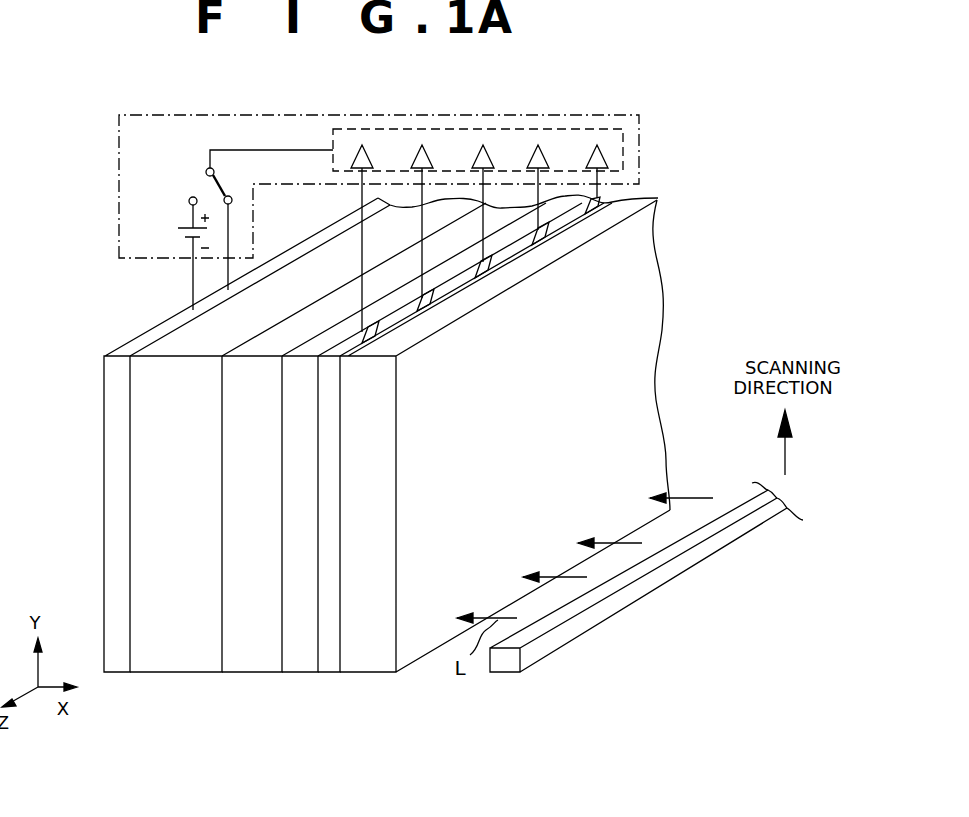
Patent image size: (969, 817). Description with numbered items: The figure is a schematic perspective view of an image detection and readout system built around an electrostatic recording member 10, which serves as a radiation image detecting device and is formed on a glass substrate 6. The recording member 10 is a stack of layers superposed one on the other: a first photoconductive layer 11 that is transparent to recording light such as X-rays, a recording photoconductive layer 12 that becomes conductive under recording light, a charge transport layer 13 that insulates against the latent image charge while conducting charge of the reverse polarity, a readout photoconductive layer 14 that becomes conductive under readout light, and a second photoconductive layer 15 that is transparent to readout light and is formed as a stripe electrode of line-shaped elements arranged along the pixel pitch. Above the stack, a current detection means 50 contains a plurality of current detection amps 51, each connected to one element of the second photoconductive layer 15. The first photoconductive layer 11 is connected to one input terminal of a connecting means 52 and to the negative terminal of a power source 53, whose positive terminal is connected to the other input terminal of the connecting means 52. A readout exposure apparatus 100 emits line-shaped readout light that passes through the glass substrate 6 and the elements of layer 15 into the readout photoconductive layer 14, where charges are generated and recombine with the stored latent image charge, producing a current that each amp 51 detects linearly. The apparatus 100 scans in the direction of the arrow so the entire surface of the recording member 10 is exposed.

The glass substrate 6 is at (383, 673).
The electrostatic recording member 10 is at (152, 312).
The first photoconductive layer 11 is at (118, 673).
The recording photoconductive layer 12 is at (174, 673).
The charge transport layer 13 is at (246, 673).
The readout photoconductive layer 14 is at (299, 673).
The second photoconductive layer 15 is at (333, 673).
The current detection means 50 is at (647, 132).
The current detection amp 51 is at (602, 150).
The connecting means 52 is at (204, 188).
The power source 53 is at (180, 238).
The readout exposure apparatus 100 is at (490, 686).